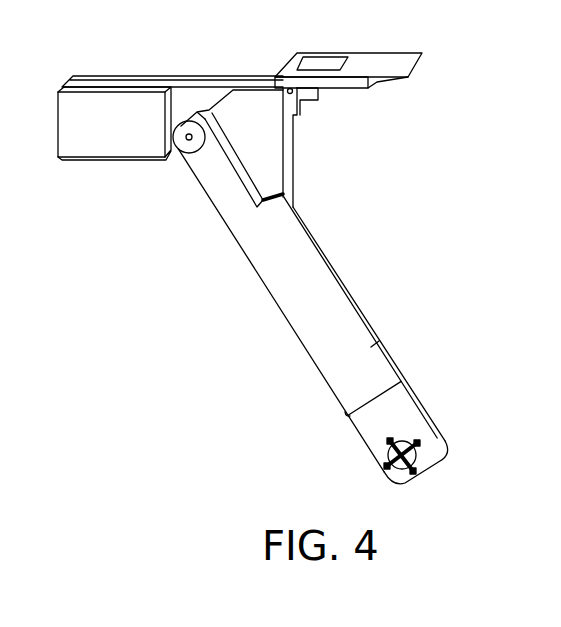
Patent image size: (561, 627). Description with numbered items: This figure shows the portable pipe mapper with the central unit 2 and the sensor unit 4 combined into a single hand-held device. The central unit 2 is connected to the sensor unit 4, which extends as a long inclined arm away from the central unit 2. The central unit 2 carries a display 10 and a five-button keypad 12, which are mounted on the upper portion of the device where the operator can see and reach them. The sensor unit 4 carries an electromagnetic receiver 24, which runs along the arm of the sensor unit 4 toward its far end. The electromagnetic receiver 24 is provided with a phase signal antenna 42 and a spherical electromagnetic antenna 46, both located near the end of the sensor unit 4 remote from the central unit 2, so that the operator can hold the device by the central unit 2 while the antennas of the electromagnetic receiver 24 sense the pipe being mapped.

The central unit 2 is at (185, 100).
The sensor unit 4 is at (228, 207).
The display 10 is at (332, 58).
The button keypad 12 is at (302, 53).
The electromagnetic receiver 24 is at (402, 393).
The phase signal antenna 42 is at (420, 467).
The spherical electromagnetic antenna 46 is at (407, 440).